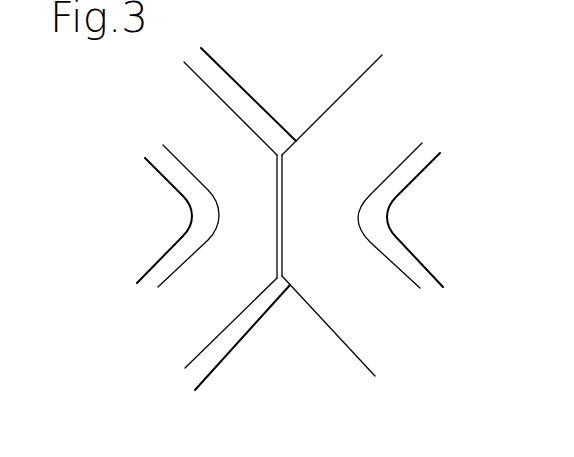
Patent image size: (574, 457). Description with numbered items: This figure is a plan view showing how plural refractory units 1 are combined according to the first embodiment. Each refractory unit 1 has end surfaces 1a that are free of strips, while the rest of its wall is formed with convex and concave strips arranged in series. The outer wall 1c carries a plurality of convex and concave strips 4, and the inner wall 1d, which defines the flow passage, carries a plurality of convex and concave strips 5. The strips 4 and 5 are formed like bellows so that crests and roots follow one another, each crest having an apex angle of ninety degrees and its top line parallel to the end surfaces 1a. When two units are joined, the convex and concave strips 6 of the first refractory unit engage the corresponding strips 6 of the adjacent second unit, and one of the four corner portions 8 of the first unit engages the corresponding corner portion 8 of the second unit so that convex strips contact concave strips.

The refractory unit 1 is at (291, 229).
The end surface 1a is at (240, 134).
The outer wall 1c is at (231, 364).
The inner wall 1d is at (278, 215).
The convex and concave strips 4 is at (206, 62).
The convex and concave strips 5 is at (190, 227).
The convex and concave strips 6 is at (277, 190).
The corner portion 8 is at (268, 246).